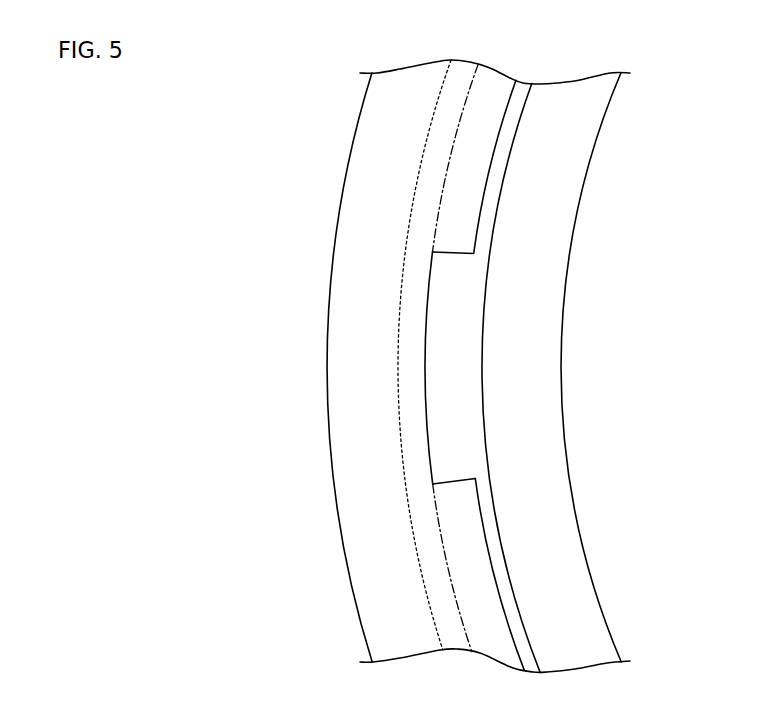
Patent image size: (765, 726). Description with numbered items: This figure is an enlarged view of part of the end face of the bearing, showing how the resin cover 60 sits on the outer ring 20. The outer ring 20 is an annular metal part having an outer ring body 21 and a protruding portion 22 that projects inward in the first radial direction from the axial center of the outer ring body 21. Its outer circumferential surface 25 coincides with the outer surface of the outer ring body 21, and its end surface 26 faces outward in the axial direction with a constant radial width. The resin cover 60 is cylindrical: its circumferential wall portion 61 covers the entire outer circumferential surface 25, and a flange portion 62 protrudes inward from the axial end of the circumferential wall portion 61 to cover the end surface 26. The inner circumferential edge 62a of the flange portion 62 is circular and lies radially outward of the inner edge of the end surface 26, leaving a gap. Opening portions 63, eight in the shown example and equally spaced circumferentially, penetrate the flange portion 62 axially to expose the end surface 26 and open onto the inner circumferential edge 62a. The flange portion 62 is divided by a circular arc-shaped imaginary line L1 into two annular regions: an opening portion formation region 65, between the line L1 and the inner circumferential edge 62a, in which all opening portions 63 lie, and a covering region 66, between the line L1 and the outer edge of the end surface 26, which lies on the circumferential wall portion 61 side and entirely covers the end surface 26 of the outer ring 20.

The outer ring 20 is at (574, 230).
The outer ring body 21 is at (513, 577).
The protruding portion 22 is at (593, 597).
The outer circumferential surface 25 is at (398, 375).
The end surface 26 is at (455, 410).
The resin cover 60 is at (353, 150).
The circumferential wall portion 61 is at (338, 222).
The flange portion 62 is at (465, 505).
The inner circumferential edge 62a is at (498, 145).
The opening portion 63 is at (427, 367).
The opening portion formation region 65 is at (475, 590).
The covering region 66 is at (432, 552).
The circular arc-shaped imaginary line L1 is at (460, 620).